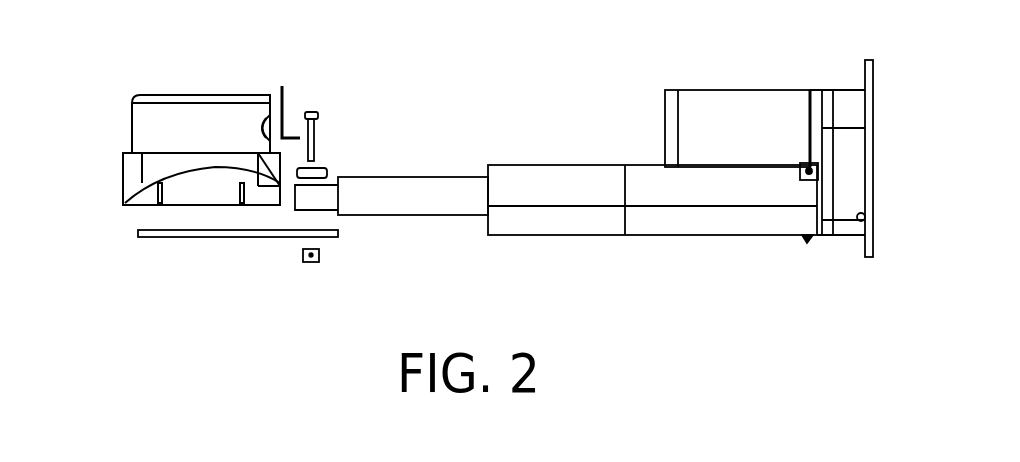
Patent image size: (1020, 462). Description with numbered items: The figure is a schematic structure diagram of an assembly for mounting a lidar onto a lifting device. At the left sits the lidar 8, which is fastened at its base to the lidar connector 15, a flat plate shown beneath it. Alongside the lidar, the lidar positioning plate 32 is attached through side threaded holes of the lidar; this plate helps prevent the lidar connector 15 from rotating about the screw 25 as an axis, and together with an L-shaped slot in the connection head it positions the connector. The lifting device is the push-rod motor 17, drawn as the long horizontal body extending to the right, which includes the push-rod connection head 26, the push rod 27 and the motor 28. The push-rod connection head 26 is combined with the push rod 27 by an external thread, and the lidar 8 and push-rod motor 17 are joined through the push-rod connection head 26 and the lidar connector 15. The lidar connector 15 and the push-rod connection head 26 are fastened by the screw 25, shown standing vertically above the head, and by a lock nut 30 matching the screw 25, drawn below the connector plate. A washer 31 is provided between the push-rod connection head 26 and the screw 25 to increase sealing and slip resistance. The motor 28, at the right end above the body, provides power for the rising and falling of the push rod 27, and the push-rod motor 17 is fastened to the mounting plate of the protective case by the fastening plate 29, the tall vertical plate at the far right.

The lidar 8 is at (155, 108).
The lidar connector 15 is at (152, 235).
The push-rod motor 17 is at (532, 170).
The screw 25 is at (311, 118).
The push-rod connection head 26 is at (341, 182).
The push rod 27 is at (368, 177).
The motor 28 is at (682, 95).
The fastening plate 29 is at (867, 250).
The lock nut 30 is at (313, 260).
The washer 31 is at (326, 172).
The lidar positioning plate 32 is at (282, 92).